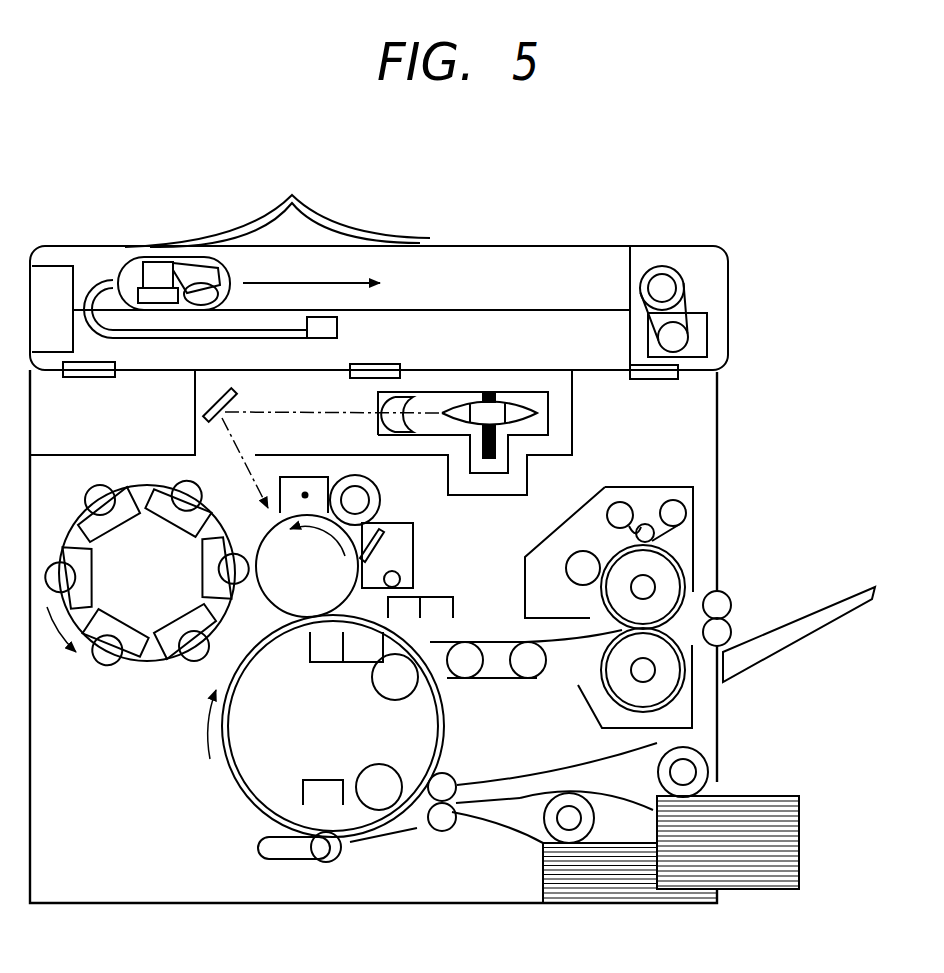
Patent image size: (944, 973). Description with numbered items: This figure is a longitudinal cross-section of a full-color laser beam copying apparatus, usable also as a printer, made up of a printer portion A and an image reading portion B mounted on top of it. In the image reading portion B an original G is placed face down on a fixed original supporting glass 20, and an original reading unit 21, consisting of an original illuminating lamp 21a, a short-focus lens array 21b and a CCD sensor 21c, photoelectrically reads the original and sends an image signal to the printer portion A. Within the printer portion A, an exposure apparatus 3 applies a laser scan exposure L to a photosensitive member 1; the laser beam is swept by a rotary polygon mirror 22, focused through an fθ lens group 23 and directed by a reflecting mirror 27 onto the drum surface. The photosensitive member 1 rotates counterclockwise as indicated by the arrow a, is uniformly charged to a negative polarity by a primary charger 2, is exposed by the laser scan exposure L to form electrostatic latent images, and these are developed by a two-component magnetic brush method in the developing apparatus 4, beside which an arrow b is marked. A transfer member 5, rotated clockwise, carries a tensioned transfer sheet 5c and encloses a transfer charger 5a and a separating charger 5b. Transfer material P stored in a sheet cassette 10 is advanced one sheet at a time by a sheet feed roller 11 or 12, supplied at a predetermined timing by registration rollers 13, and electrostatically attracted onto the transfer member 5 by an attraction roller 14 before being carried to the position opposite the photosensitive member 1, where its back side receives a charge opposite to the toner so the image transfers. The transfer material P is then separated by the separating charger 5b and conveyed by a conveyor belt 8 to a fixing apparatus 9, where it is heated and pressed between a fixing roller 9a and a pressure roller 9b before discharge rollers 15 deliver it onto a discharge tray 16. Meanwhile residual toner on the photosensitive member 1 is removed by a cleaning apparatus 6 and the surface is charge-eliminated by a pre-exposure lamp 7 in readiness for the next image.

The printer portion A is at (790, 424).
The image reading portion B is at (780, 302).
The original G is at (342, 228).
The fixed original supporting glass 20 is at (545, 247).
The original reading unit 21 is at (196, 232).
The original illuminating lamp 21a is at (197, 236).
The short-focus lens array 21b is at (158, 266).
The CCD sensor 21c is at (142, 292).
The rotary polygon mirror 22 is at (500, 404).
The fθ lens group 23 is at (404, 397).
The reflecting mirror 27 is at (238, 395).
The exposure apparatus 3 is at (562, 428).
The laser scan exposure L is at (248, 466).
The photosensitive member 1 is at (263, 602).
The arrow a is at (317, 542).
The primary charger 2 is at (318, 477).
The pre-exposure lamp 7 is at (381, 491).
The cleaning apparatus 6 is at (413, 536).
The developing apparatus 4 is at (156, 672).
The rotary rotation direction b is at (60, 633).
The transfer member 5 is at (307, 733).
The transfer charger 5a is at (327, 664).
The separating charger 5b is at (353, 664).
The transfer sheet 5c is at (243, 795).
The conveyor belt 8 is at (490, 642).
The fixing apparatus 9 is at (654, 574).
The fixing roller 9a is at (675, 547).
The pressure roller 9b is at (680, 702).
The discharge rollers 15 is at (731, 600).
The discharge tray 16 is at (843, 598).
The sheet feed roller 11 is at (706, 756).
The sheet feed roller 12 is at (595, 817).
The registration rollers 13 is at (447, 832).
The attraction roller 14 is at (341, 851).
The transfer material P is at (766, 797).
The sheet cassette 10 is at (800, 853).